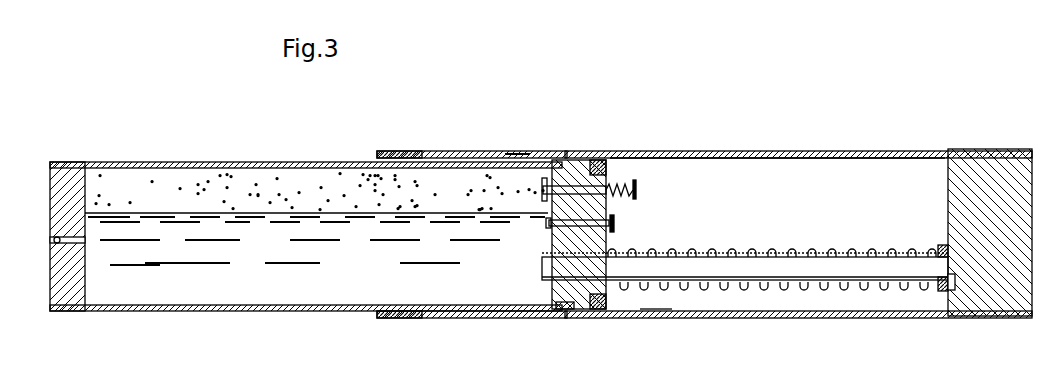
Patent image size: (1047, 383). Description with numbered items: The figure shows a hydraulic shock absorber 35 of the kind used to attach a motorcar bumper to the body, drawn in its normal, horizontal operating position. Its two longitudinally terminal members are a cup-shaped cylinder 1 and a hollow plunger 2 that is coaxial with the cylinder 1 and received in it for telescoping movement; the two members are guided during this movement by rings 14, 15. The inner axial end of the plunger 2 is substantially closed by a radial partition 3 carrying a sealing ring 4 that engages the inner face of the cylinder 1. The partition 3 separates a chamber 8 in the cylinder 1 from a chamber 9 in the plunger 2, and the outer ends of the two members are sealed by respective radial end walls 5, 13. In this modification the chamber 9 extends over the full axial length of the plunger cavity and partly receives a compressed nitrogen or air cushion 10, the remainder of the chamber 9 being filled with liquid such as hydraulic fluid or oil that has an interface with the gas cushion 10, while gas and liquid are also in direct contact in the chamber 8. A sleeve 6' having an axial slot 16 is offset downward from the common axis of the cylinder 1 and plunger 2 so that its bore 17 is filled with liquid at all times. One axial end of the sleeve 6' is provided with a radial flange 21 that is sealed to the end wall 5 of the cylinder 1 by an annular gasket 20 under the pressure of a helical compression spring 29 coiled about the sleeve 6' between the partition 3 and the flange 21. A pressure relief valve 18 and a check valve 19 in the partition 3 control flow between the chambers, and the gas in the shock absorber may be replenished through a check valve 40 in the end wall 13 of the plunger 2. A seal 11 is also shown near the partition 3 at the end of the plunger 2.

The cylinder 1 is at (740, 151).
The plunger 2 is at (182, 312).
The partition 3 is at (585, 310).
The sealing ring 4 is at (600, 310).
The end wall 5 is at (975, 165).
The sleeve 6' is at (656, 338).
The chamber 8 is at (828, 170).
The chamber 9 is at (335, 306).
The gas cushion 10 is at (205, 178).
The seal 11 is at (556, 311).
The end wall 13 is at (70, 302).
The guide ring 14 is at (572, 151).
The guide ring 15 is at (402, 151).
The axial slot 16 is at (745, 292).
The bore 17 is at (698, 284).
The pressure relief valve 18 is at (621, 160).
The check valve 19 is at (562, 232).
The annular gasket 20 is at (958, 302).
The radial flange 21 is at (944, 300).
The helical compression spring 29 is at (830, 292).
The shock absorber 35 is at (517, 150).
The check valve 40 is at (52, 240).